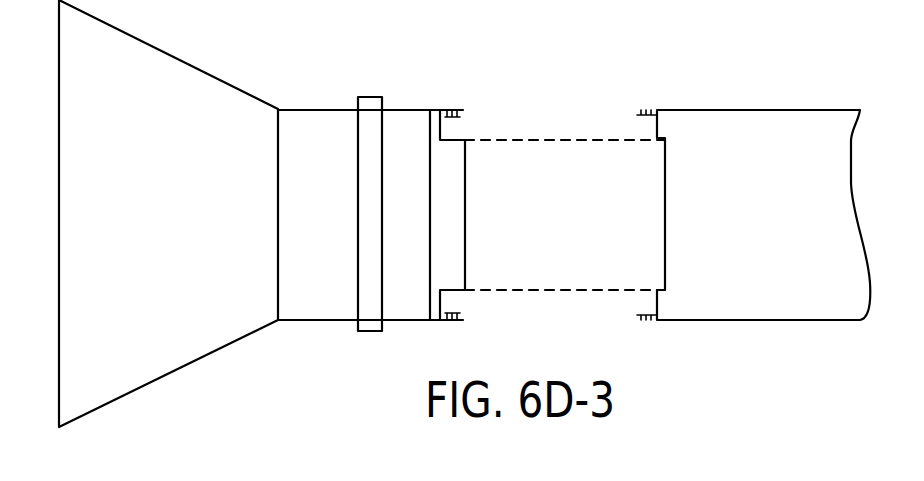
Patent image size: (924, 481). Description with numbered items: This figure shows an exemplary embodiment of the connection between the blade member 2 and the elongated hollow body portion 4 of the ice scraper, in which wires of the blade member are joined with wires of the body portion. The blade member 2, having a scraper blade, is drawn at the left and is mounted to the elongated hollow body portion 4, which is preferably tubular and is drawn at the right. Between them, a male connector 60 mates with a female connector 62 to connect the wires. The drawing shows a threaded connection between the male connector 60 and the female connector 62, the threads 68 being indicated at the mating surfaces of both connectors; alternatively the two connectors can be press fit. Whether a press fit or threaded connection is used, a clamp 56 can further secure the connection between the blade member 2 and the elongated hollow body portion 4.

The blade member 2 is at (168, 213).
The elongated hollow body portion 4 is at (762, 202).
The clamp 56 is at (362, 333).
The male connector 60 is at (453, 138).
The female connector 62 is at (657, 128).
The threads 68 is at (450, 110).